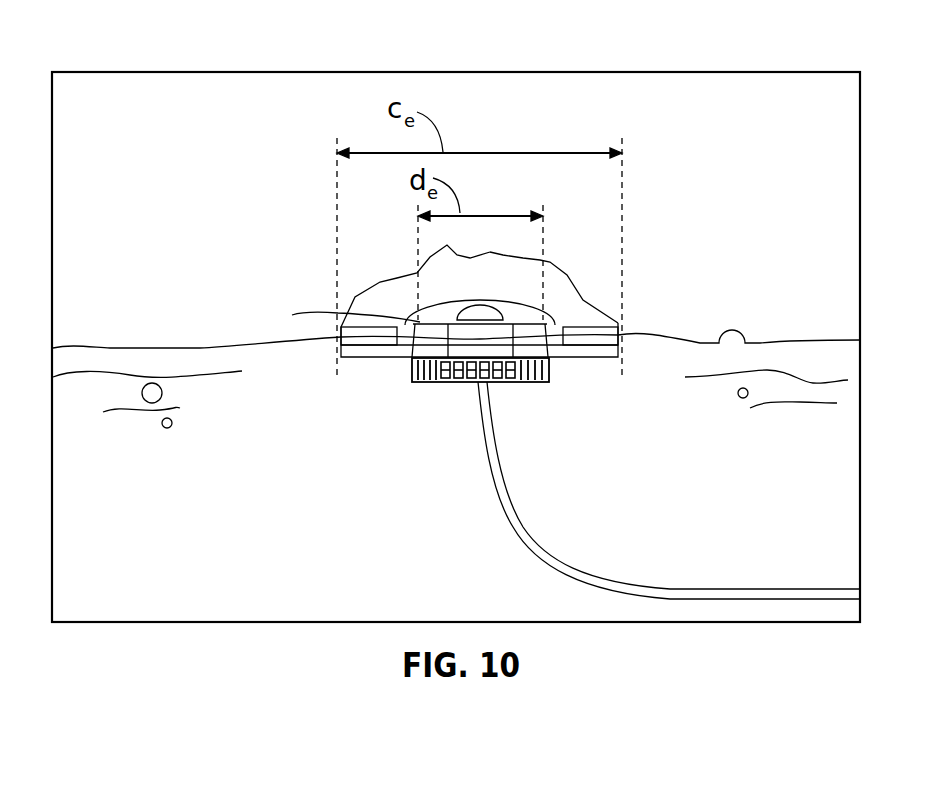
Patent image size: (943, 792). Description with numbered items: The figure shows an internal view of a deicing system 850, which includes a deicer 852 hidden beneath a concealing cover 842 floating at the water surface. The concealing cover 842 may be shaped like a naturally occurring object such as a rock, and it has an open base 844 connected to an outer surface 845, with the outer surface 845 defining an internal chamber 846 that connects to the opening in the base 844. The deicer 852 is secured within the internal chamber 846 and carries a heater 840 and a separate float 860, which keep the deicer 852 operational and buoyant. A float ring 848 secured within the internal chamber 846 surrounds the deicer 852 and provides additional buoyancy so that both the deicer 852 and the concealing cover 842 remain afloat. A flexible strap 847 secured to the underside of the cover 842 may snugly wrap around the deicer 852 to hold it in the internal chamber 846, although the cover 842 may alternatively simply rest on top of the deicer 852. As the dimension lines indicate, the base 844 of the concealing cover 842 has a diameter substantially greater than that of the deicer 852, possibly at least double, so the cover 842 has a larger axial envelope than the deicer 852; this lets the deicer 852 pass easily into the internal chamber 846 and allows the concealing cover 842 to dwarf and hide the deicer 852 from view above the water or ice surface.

The deicing system 850 is at (305, 197).
The concealing cover 842 is at (533, 247).
The outer surface 845 is at (397, 285).
The internal chamber 846 is at (557, 305).
The flexible strap 847 is at (328, 313).
The open base 844 is at (338, 357).
The float ring 848 is at (393, 333).
The deicer 852 is at (547, 350).
The float 860 is at (510, 318).
The heater 840 is at (437, 385).